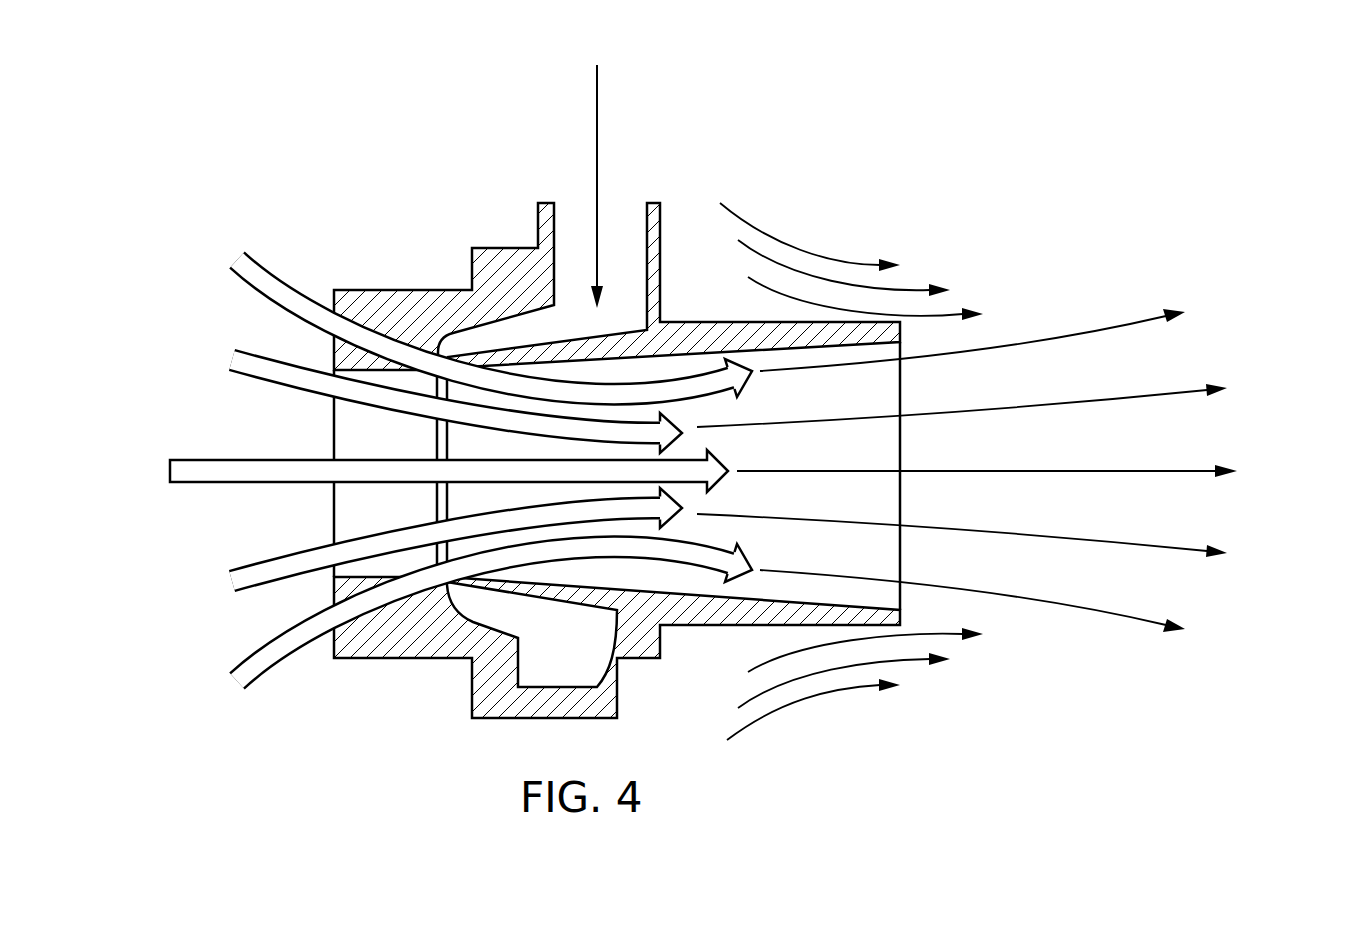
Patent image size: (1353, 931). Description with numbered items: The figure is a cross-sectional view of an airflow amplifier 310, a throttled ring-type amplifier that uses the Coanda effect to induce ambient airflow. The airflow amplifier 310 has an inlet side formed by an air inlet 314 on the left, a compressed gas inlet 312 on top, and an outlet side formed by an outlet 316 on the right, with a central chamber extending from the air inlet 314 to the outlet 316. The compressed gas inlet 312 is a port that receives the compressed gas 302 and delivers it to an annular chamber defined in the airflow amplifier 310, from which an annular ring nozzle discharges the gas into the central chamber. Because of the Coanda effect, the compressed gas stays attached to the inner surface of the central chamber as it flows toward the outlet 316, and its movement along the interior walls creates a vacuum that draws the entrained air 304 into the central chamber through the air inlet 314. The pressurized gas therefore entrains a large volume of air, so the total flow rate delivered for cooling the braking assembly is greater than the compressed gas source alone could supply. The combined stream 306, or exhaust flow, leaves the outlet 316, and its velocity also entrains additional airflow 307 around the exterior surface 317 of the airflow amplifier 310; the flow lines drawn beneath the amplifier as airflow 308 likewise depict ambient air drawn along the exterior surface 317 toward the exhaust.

The airflow amplifier 310 is at (259, 112).
The compressed gas 302 is at (597, 132).
The entrained air 304 is at (262, 578).
The combined stream 306 is at (1122, 326).
The additional airflow 307 is at (848, 255).
The entrained air flow 308 is at (827, 698).
The compressed gas inlet 312 is at (572, 203).
The air inlet 314 is at (333, 440).
The outlet 316 is at (901, 447).
The exterior surface 317 is at (704, 322).